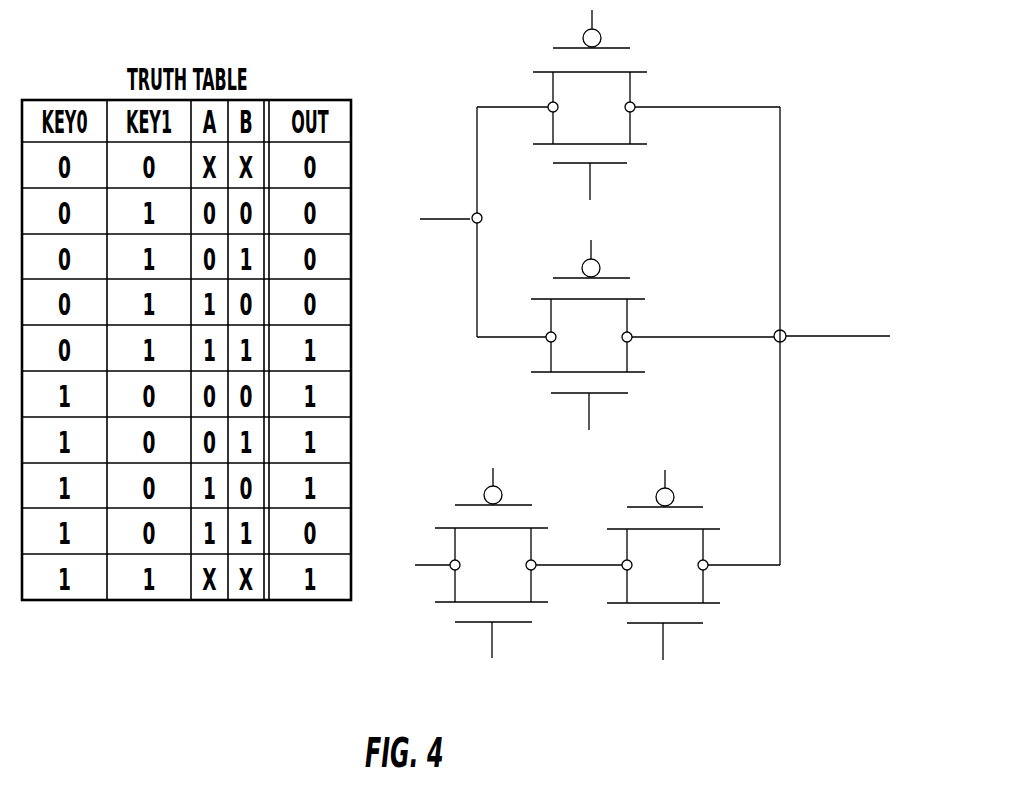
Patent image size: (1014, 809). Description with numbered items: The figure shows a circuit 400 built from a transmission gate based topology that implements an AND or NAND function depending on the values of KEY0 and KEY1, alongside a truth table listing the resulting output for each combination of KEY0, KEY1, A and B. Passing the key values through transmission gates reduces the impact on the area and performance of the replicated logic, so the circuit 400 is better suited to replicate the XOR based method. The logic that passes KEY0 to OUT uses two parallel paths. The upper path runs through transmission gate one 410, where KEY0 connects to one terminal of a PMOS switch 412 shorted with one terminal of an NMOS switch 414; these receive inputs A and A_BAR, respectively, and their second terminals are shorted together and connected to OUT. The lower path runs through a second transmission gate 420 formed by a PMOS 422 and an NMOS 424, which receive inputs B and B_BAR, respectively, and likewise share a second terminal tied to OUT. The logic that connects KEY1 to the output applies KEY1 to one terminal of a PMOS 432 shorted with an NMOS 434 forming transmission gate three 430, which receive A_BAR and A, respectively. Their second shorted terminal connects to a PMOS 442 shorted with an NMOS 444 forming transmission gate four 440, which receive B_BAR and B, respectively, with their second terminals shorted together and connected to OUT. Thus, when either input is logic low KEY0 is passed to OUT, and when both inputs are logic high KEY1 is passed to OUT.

The circuit 400 is at (838, 62).
The transmission gate one 410 is at (632, 93).
The PMOS switch 412 is at (560, 47).
The NMOS switch 414 is at (568, 164).
The second transmission gate 420 is at (630, 319).
The PMOS 422 is at (563, 277).
The NMOS 424 is at (570, 393).
The transmission gate three 430 is at (452, 583).
The PMOS 432 is at (474, 623).
The NMOS 434 is at (462, 505).
The transmission gate four 440 is at (706, 587).
The PMOS 442 is at (650, 623).
The NMOS 444 is at (685, 507).